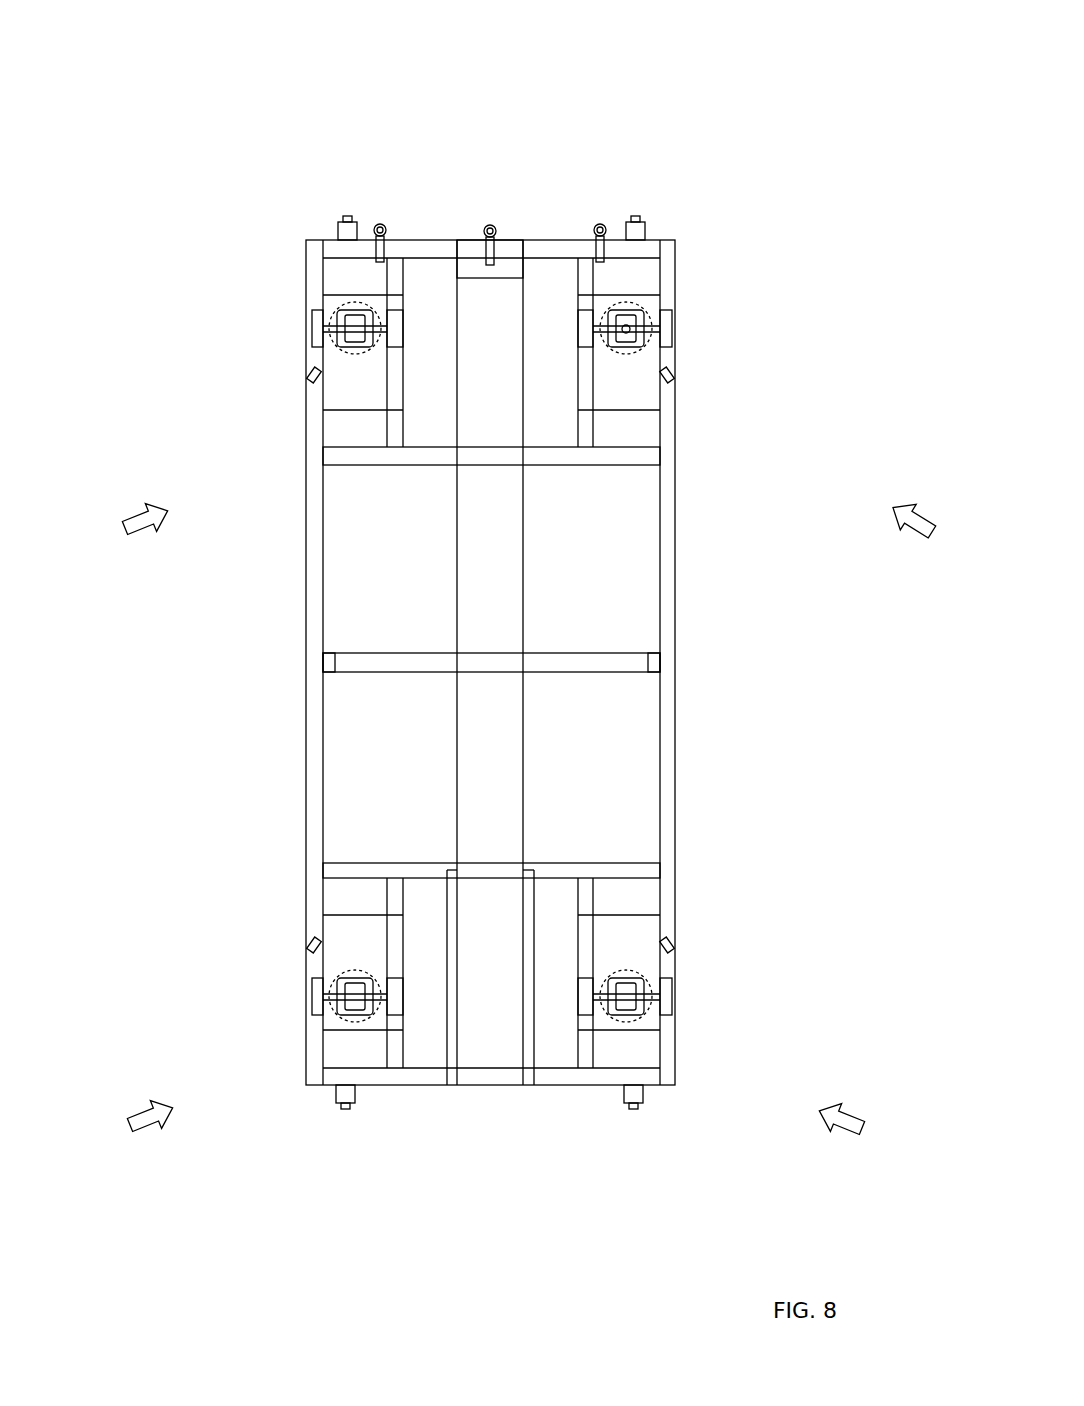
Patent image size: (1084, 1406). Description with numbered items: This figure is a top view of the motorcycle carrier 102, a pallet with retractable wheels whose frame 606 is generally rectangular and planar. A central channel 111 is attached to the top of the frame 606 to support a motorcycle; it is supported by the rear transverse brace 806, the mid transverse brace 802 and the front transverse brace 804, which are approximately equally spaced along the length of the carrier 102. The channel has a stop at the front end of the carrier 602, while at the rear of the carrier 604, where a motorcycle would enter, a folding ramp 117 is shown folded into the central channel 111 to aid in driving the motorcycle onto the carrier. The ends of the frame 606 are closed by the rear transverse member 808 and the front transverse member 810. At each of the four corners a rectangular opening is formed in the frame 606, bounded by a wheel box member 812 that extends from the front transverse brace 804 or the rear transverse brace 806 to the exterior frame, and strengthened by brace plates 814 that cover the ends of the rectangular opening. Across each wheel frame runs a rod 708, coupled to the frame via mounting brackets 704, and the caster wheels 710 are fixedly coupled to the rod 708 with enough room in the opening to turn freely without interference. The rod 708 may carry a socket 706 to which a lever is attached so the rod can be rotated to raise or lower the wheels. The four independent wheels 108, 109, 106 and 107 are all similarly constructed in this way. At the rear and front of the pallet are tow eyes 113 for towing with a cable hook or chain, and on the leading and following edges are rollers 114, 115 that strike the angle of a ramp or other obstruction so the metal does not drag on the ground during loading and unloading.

The motorcycle carrier 102 is at (487, 675).
The wheel 106 is at (120, 1142).
The wheel 107 is at (883, 1127).
The wheel 108 is at (112, 546).
The wheel 109 is at (923, 545).
The central channel 111 is at (490, 662).
The eyes 113 is at (592, 228).
The rollers 114 is at (750, 92).
The rollers 115 is at (343, 1098).
The folding ramp 117 is at (515, 272).
The end of carrier 602 is at (110, 1279).
The rear of carrier 604 is at (112, 58).
The frame 606 is at (402, 662).
The mounting brackets 704 is at (665, 997).
The socket 706 is at (640, 322).
The rod 708 is at (643, 997).
The caster wheels 710 is at (628, 981).
The mid transverse brace 802 is at (620, 660).
The front transverse brace 804 is at (560, 872).
The rear transverse brace 806 is at (557, 457).
The rear transverse member 808 is at (423, 248).
The front transverse member 810 is at (437, 1077).
The wheel box member 812 is at (393, 390).
The brace plates 814 is at (347, 891).